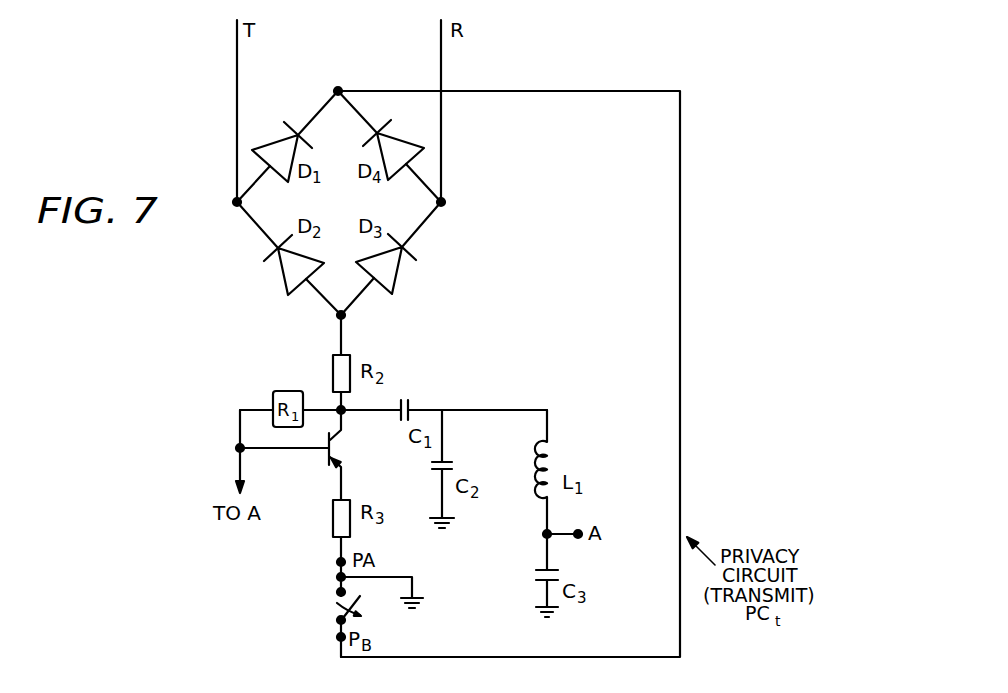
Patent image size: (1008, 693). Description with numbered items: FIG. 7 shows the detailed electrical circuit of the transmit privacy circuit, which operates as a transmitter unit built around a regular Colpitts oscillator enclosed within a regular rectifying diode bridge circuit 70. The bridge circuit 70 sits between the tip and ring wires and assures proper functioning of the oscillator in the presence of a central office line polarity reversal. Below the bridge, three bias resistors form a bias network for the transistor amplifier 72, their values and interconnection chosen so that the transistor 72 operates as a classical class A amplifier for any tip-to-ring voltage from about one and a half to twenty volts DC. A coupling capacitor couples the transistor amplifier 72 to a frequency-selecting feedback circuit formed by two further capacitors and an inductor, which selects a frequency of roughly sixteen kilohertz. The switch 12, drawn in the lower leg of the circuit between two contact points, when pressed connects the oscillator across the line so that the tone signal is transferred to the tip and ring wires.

The rectifying diode bridge circuit 70 is at (424, 237).
The transistor amplifier 72 is at (343, 440).
The switch 12 is at (325, 619).